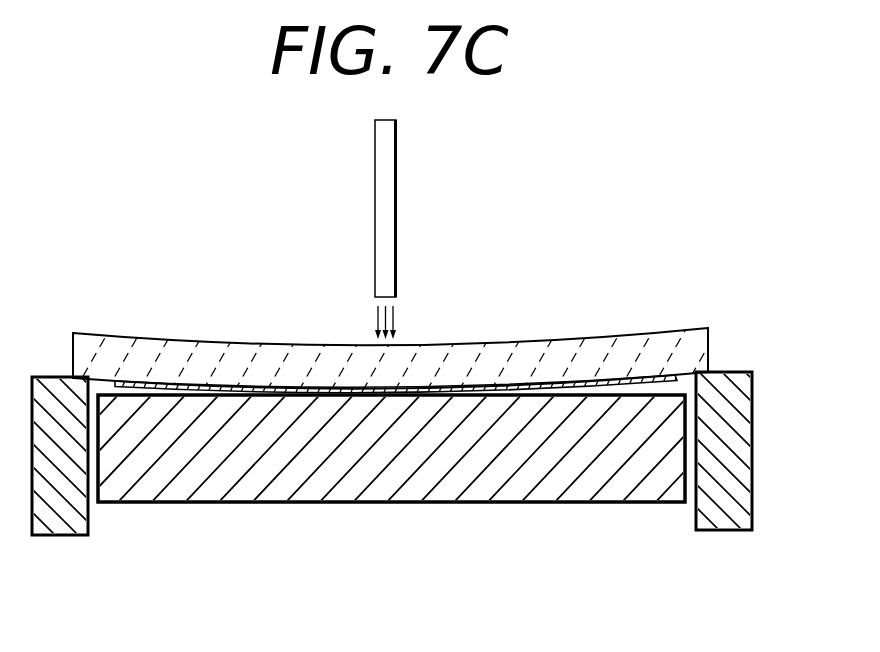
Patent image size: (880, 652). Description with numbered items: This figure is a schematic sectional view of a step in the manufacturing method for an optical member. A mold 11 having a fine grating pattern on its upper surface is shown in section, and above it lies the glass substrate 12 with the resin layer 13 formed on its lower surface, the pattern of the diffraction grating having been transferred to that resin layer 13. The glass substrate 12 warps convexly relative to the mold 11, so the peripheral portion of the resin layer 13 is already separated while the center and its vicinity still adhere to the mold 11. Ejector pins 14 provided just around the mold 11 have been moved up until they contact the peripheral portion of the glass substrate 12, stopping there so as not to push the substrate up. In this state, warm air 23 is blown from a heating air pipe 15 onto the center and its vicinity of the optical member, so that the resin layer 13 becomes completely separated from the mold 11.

The mold 11 is at (656, 484).
The glass substrate 12 is at (675, 337).
The resin layer 13 is at (605, 383).
The ejector pins 14 is at (745, 489).
The heating air pipe 15 is at (386, 210).
The warm air 23 is at (400, 321).